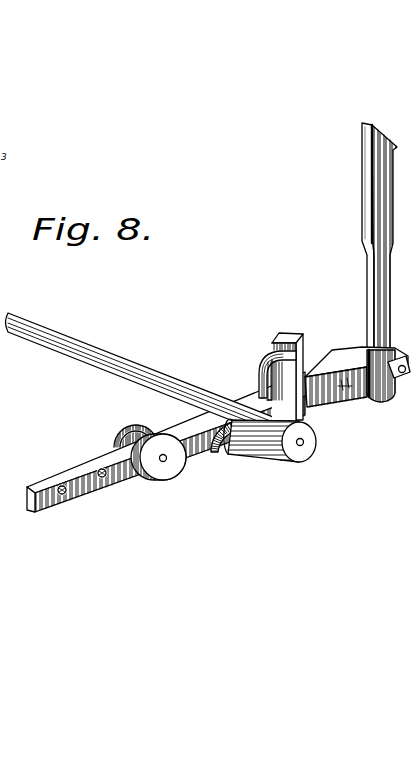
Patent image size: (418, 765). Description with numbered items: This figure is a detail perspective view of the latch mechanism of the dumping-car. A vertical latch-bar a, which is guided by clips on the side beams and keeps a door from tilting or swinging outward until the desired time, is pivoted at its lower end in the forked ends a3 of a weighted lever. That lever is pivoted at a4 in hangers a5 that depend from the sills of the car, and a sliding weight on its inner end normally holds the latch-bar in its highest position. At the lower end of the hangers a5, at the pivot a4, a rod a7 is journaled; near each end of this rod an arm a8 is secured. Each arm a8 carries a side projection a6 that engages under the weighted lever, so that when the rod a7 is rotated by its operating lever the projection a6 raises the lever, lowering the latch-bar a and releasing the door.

The latch-bar a is at (384, 228).
The forked ends a3 is at (236, 441).
The pivot a4 is at (306, 407).
The hangers a5 is at (271, 347).
The side projection a6 is at (163, 480).
The rod a7 is at (151, 379).
The arm a8 is at (242, 442).